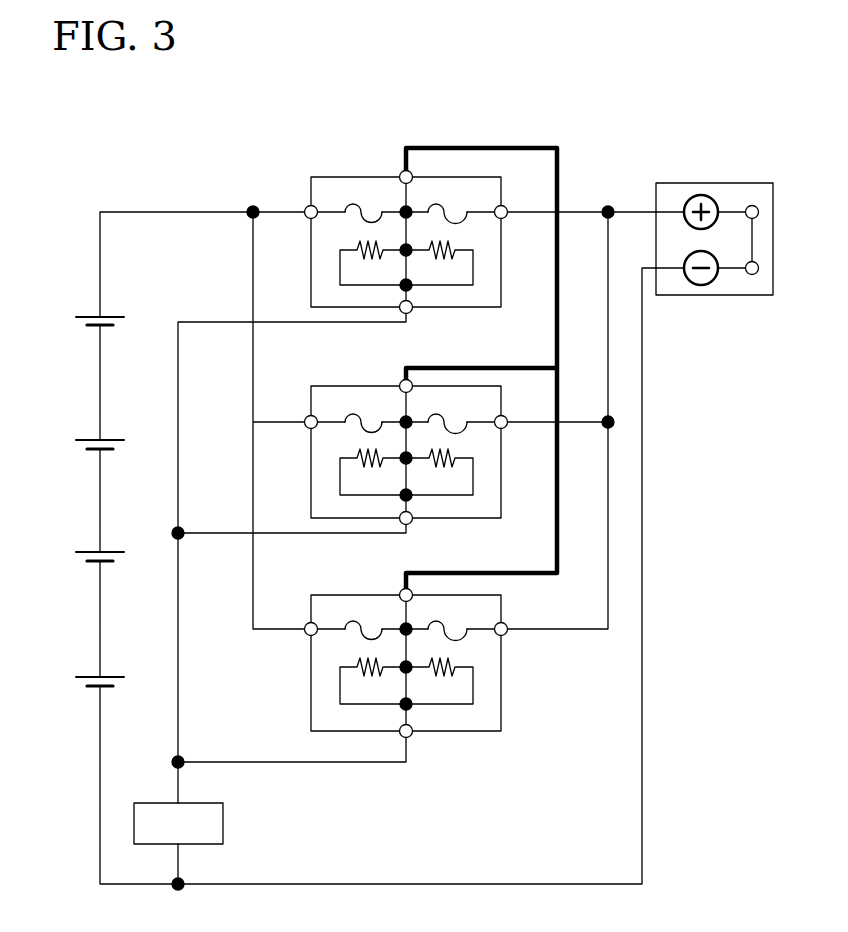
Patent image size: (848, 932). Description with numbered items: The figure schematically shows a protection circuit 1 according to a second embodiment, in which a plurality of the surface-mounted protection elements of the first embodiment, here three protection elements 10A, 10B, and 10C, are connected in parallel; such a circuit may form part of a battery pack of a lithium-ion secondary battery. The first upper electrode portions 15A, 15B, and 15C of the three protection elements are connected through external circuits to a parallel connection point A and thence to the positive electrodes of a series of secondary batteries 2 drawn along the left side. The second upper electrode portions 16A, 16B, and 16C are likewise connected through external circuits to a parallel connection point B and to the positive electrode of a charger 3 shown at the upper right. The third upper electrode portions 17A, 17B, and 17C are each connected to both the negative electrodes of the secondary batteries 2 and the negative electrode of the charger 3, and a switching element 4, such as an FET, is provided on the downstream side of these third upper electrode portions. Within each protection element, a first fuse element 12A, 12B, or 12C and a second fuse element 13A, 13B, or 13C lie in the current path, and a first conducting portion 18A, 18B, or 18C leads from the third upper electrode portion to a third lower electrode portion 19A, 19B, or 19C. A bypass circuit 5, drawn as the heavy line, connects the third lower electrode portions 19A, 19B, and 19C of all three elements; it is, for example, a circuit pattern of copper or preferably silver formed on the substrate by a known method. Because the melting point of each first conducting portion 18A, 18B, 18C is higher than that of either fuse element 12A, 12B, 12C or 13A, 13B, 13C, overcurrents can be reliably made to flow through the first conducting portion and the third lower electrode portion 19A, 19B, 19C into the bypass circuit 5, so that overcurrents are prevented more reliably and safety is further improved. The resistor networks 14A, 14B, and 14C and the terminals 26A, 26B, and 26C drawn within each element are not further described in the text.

The protection circuit 1 is at (760, 118).
The secondary battery 2 is at (78, 317).
The charger 3 is at (735, 183).
The switching element 4 is at (187, 803).
The bypass circuit 5 is at (560, 177).
The parallel connection point A is at (250, 207).
The parallel connection point B is at (609, 206).
The protection element 10A is at (492, 162).
The protection element 10B is at (515, 385).
The protection element 10C is at (515, 594).
The first fuse element 12A is at (353, 203).
The first fuse element 12B is at (353, 411).
The first fuse element 12C is at (353, 618).
The second fuse element 13A is at (437, 203).
The second fuse element 13B is at (438, 413).
The second fuse element 13C is at (438, 620).
The resistor circuit A 14A is at (472, 236).
The resistor circuit B 14B is at (472, 446).
The resistor circuit C 14C is at (474, 659).
The first upper electrode portion 15A is at (306, 207).
The first upper electrode portion 15B is at (306, 427).
The first upper electrode portion 15C is at (306, 634).
The second upper electrode portion 16A is at (506, 207).
The second upper electrode portion 16B is at (507, 426).
The second upper electrode portion 16C is at (507, 634).
The third upper electrode portion 17A is at (409, 205).
The third upper electrode portion 17B is at (409, 417).
The third upper electrode portion 17C is at (409, 624).
The first conducting portion 18A is at (403, 196).
The first conducting portion 18B is at (403, 407).
The first conducting portion 18C is at (403, 615).
The third lower electrode portion 19A is at (401, 176).
The third lower electrode portion 19B is at (402, 381).
The third lower electrode portion 19C is at (402, 590).
The output terminal A 26A is at (410, 312).
The output terminal B 26B is at (410, 522).
The output terminal C 26C is at (409, 736).